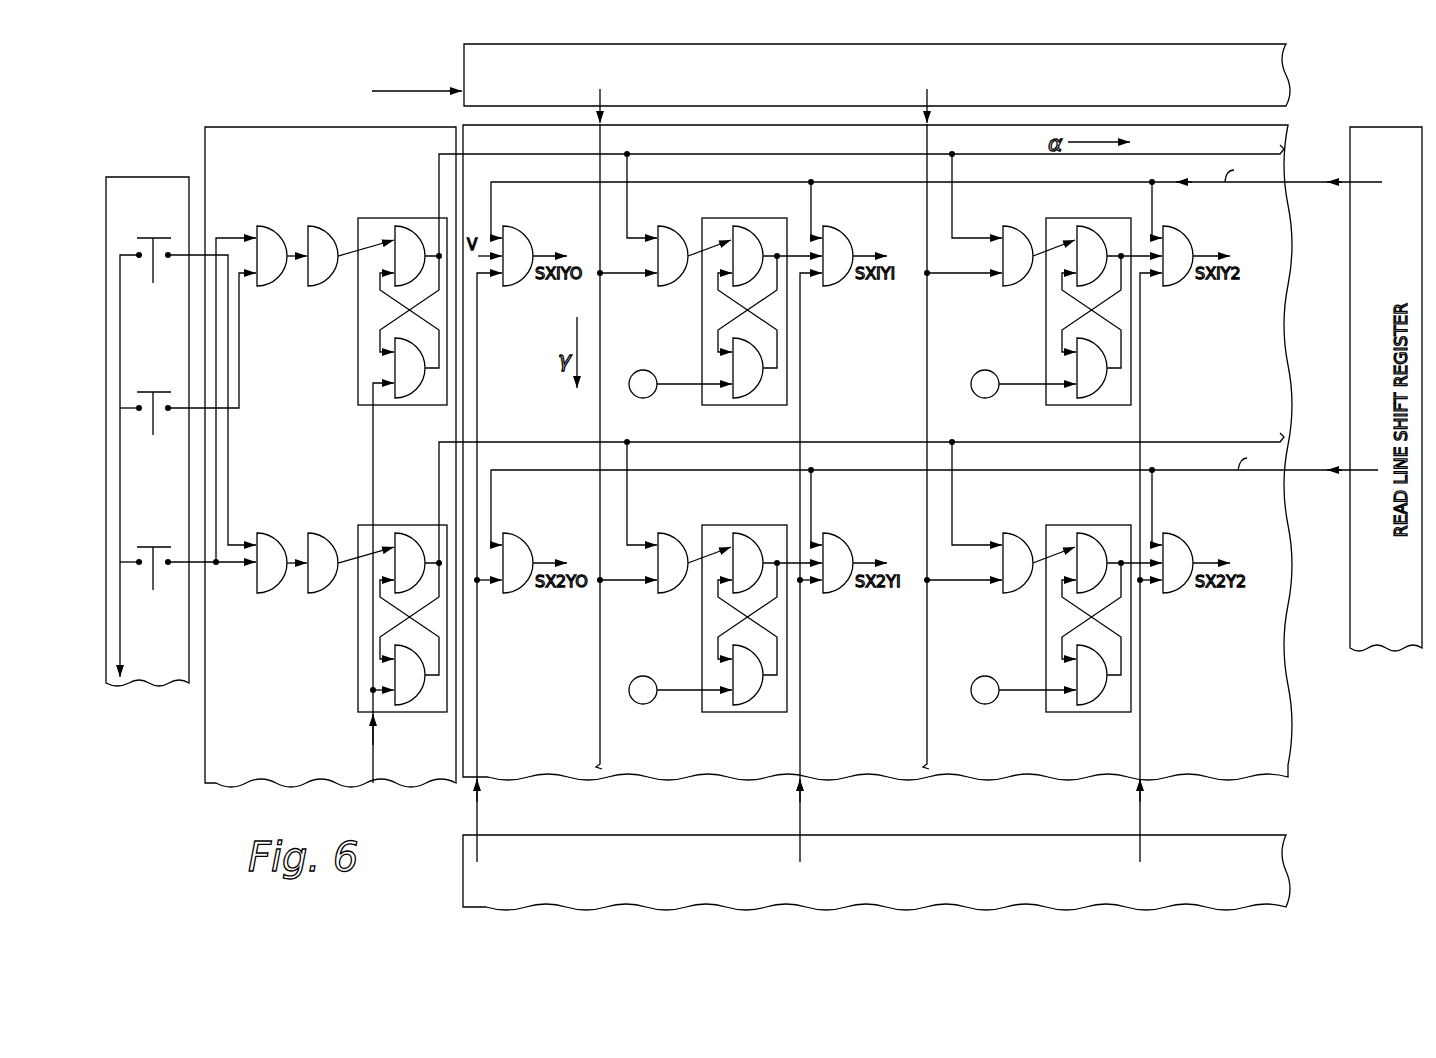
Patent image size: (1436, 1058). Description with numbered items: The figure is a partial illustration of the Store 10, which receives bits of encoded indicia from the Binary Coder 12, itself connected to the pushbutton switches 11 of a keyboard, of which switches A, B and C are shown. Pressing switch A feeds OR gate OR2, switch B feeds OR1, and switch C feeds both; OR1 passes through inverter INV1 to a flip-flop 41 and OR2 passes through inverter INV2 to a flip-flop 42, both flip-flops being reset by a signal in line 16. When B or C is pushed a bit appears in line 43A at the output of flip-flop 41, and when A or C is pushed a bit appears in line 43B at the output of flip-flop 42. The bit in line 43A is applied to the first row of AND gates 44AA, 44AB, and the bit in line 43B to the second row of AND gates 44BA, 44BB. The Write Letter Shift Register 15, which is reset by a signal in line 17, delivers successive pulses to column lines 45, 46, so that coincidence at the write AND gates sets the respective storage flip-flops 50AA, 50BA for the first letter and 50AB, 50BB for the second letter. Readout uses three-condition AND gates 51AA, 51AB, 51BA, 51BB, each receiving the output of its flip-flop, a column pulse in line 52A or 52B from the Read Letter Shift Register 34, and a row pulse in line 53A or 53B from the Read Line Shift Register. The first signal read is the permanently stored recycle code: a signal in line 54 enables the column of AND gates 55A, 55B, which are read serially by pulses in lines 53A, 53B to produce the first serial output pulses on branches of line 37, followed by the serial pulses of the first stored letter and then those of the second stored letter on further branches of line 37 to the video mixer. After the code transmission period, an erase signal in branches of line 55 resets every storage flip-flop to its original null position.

The Store 10 is at (1299, 748).
The pushbutton switches of a keyboard 11 is at (145, 174).
The Binary Coder 12 is at (314, 125).
The Write Letter Shift Register 15 is at (462, 58).
The reset line 16 is at (374, 756).
The reset signal line 17 is at (393, 90).
The Read Letter Shift Register 34 is at (1090, 900).
The output line 37 is at (546, 254).
The flip-flop 41 is at (383, 217).
The flip-flop 42 is at (363, 524).
The row line 43A is at (492, 158).
The row line 43B is at (500, 446).
The AND gate 44AA is at (692, 224).
The AND gate 44AB is at (1017, 224).
The AND gate 44BA is at (692, 531).
The AND gate 44BB is at (1017, 531).
The column line 45 is at (598, 214).
The column line 46 is at (925, 380).
The flip-flop 50AA is at (728, 218).
The flip-flop 50AB is at (1072, 218).
The flip-flop 50BA is at (728, 525).
The flip-flop 50BB is at (1072, 525).
The three condition input AND gate 51AA is at (836, 286).
The three condition input AND gate 51AB is at (1176, 286).
The three condition input AND gate 51BA is at (836, 593).
The three condition input AND gate 51BB is at (1176, 593).
The read letter line 52A is at (800, 848).
The read letter line 52B is at (1140, 848).
The read line 53A is at (1305, 184).
The read line 53B is at (1291, 473).
The read recycle line 54 is at (477, 848).
The erase line 55 is at (669, 382).
The AND gate 55A is at (514, 287).
The AND gate 55B is at (514, 594).